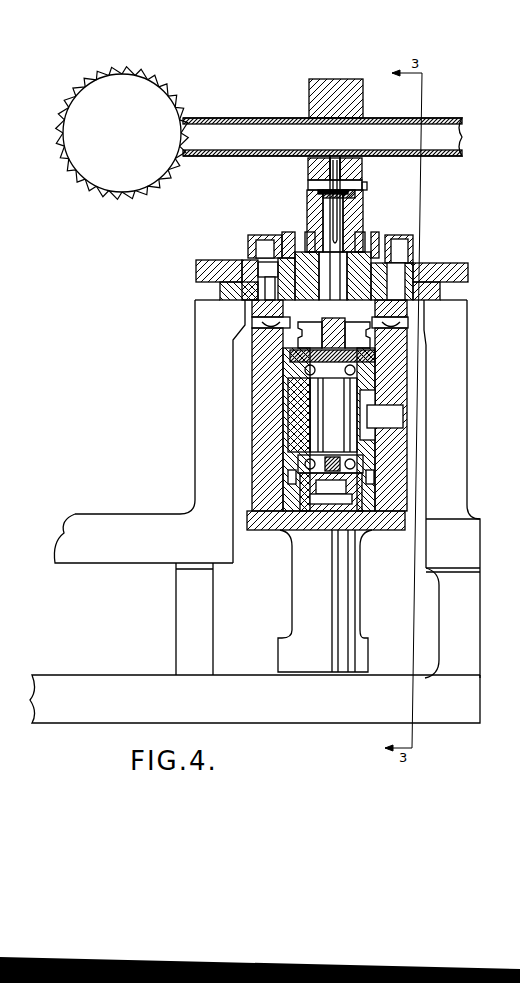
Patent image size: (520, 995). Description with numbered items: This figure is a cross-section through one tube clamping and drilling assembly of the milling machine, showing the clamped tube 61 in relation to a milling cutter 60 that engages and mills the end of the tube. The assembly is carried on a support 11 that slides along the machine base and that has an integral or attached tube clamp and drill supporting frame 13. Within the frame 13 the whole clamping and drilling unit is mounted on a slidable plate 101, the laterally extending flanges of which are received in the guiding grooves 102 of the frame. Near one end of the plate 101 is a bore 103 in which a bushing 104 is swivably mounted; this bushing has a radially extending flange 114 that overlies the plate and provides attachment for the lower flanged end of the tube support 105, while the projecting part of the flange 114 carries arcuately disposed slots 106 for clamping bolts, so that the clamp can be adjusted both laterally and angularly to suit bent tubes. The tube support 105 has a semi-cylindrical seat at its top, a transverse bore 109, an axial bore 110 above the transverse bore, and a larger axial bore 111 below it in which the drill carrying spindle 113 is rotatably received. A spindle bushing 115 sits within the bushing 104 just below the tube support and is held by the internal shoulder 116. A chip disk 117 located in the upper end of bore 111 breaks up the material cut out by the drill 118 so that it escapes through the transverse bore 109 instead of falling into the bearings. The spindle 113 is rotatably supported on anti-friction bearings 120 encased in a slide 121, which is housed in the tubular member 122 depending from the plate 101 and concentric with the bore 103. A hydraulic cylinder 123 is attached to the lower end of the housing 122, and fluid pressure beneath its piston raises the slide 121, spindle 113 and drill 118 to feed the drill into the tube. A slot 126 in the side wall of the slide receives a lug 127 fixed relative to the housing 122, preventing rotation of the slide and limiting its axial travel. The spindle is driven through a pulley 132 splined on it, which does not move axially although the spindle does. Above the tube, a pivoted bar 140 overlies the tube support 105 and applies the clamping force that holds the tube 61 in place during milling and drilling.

The support 11 is at (85, 553).
The tube clamp and drill supporting frame 13 is at (468, 410).
The milling cutter 60 is at (113, 178).
The tube 61 is at (228, 118).
The plate 101 is at (440, 294).
The guiding grooves 102 is at (220, 294).
The bore 103 is at (410, 270).
The bushing 104 is at (366, 232).
The tube support 105 is at (310, 202).
The arcuately disposed slots 106 is at (400, 240).
The transverse bore 109 is at (366, 186).
The axial bore 110 is at (355, 158).
The larger axial bore 111 is at (312, 158).
The drill carrying spindle 113 is at (318, 192).
The radially extending flange 114 is at (415, 250).
The spindle bushing 115 is at (265, 246).
The internal shoulder 116 is at (250, 270).
The chip disk 117 is at (352, 195).
The drill 118 is at (335, 156).
The anti-friction bearings 120 is at (297, 532).
The slide 121 is at (266, 413).
The tubular member 122 is at (276, 445).
The hydraulic cylinder 123 is at (362, 601).
The slot 126 is at (359, 411).
The lug 127 is at (381, 415).
The pulley 132 is at (410, 325).
The bar 140 is at (342, 79).